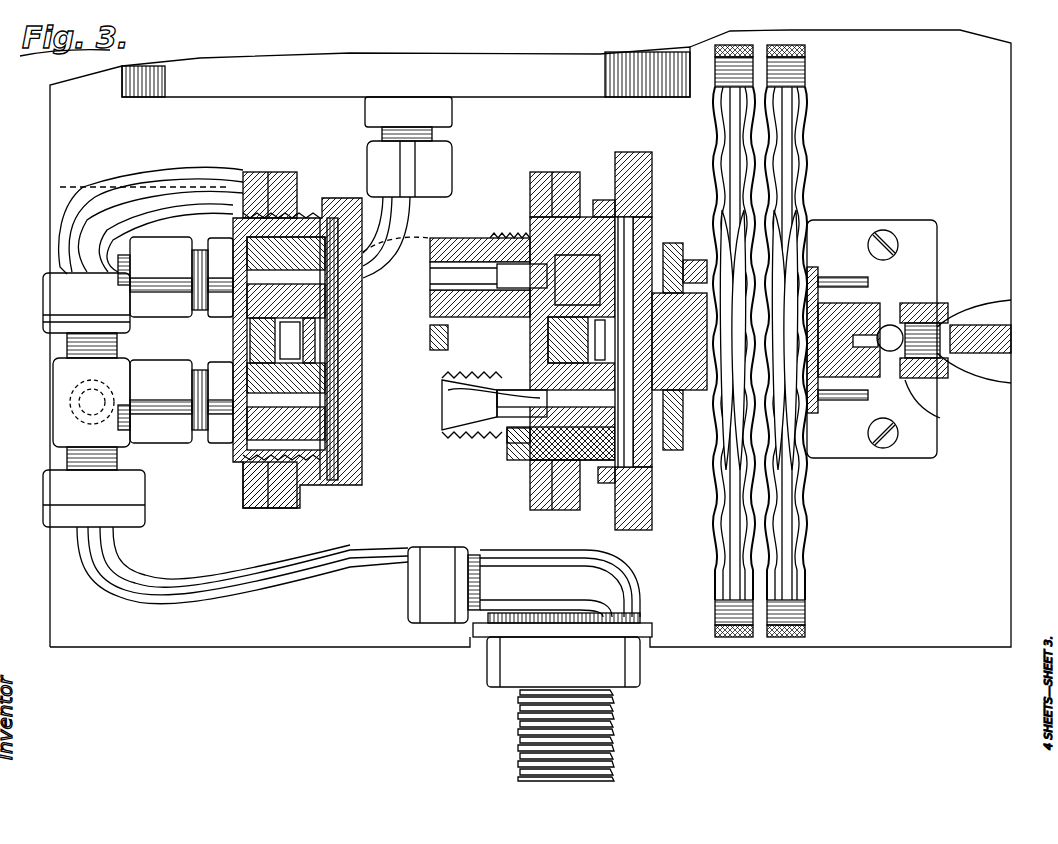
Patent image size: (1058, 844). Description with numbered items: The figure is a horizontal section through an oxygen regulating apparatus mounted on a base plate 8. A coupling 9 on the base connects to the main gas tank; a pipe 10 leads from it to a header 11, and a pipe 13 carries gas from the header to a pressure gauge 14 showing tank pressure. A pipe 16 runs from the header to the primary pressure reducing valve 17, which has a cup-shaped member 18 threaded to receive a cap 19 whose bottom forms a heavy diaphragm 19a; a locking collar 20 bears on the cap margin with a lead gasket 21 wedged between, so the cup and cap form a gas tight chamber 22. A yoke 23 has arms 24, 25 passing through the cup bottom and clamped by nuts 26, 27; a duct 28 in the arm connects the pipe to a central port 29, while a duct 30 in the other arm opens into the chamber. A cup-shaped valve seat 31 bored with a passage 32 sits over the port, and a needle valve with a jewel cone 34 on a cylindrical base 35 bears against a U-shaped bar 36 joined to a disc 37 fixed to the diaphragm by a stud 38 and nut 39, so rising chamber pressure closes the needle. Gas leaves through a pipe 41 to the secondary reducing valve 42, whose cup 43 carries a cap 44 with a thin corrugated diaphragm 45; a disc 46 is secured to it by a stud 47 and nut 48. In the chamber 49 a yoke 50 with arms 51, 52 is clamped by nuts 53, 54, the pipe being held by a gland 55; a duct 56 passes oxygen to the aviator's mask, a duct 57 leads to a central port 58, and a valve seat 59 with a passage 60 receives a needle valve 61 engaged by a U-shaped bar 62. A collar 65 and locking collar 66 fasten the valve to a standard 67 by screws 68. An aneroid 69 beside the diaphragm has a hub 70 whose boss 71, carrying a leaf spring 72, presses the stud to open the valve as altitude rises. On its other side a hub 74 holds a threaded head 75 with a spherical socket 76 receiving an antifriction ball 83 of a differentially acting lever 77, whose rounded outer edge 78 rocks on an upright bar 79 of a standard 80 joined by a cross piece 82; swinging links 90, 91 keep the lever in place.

The base plate 8 is at (530, 354).
The coupling 9 is at (610, 600).
The pipe 10 is at (340, 597).
The header 11 is at (55, 432).
The pipe 13 is at (407, 187).
The pressure gauge 14 is at (660, 52).
The pipe 16 is at (118, 432).
The primary pressure reducing valve 17 is at (296, 164).
The cup-shaped member 18 is at (240, 475).
The cap 19 is at (315, 485).
The diaphragm 19a is at (350, 418).
The locking collar 20 is at (248, 505).
The lead gasket 21 is at (243, 490).
The chamber 22 is at (235, 452).
The yoke 23 is at (287, 430).
The arm 24 is at (220, 318).
The arm 25 is at (210, 300).
The nut 26 is at (215, 438).
The nut 27 is at (215, 240).
The duct 28 is at (340, 400).
The port 29 is at (355, 300).
The duct 30 is at (300, 230).
The valve seat 31 is at (340, 375).
The passage 32 is at (383, 306).
The cone 34 is at (345, 315).
The cylindrical base 35 is at (330, 290).
The U-shaped bar 36 is at (260, 342).
The disc 37 is at (345, 465).
The stud 38 is at (350, 323).
The nut 39 is at (345, 335).
The pipe 41 is at (124, 220).
The secondary reducing valve 42 is at (596, 171).
The cup 43 is at (545, 448).
The cap 44 is at (625, 500).
The diaphragm 45 is at (650, 460).
The disc 46 is at (648, 482).
The stud 47 is at (650, 300).
The nut 48 is at (652, 400).
The chamber 49 is at (535, 465).
The yoke 50 is at (600, 470).
The arm 51 is at (463, 432).
The arm 52 is at (495, 238).
The nut 53 is at (520, 440).
The nut 54 is at (518, 236).
The gland 55 is at (470, 240).
The duct 56 is at (500, 400).
The duct 57 is at (485, 236).
The port 58 is at (640, 250).
The valve seat 59 is at (655, 210).
The passage 60 is at (650, 420).
The needle valve 61 is at (585, 320).
The U-shaped bar 62 is at (535, 190).
The collar 65 is at (540, 500).
The locking collar 66 is at (560, 505).
The standard 67 is at (465, 355).
The screws 68 is at (455, 345).
The aneroid 69 is at (712, 128).
The hub 70 is at (690, 260).
The boss 71 is at (700, 300).
The leaf spring 72 is at (673, 420).
The hub 74 is at (813, 270).
The head 75 is at (850, 377).
The spherical socket 76 is at (875, 375).
The differentially acting lever 77 is at (935, 360).
The rounded outer edge 78 is at (940, 323).
The upright bar 79 is at (1011, 340).
The standard 80 is at (1011, 302).
The cross piece 82 is at (880, 290).
The antifriction ball 83 is at (920, 310).
The swinging link 90 is at (895, 330).
The swinging link 91 is at (941, 407).